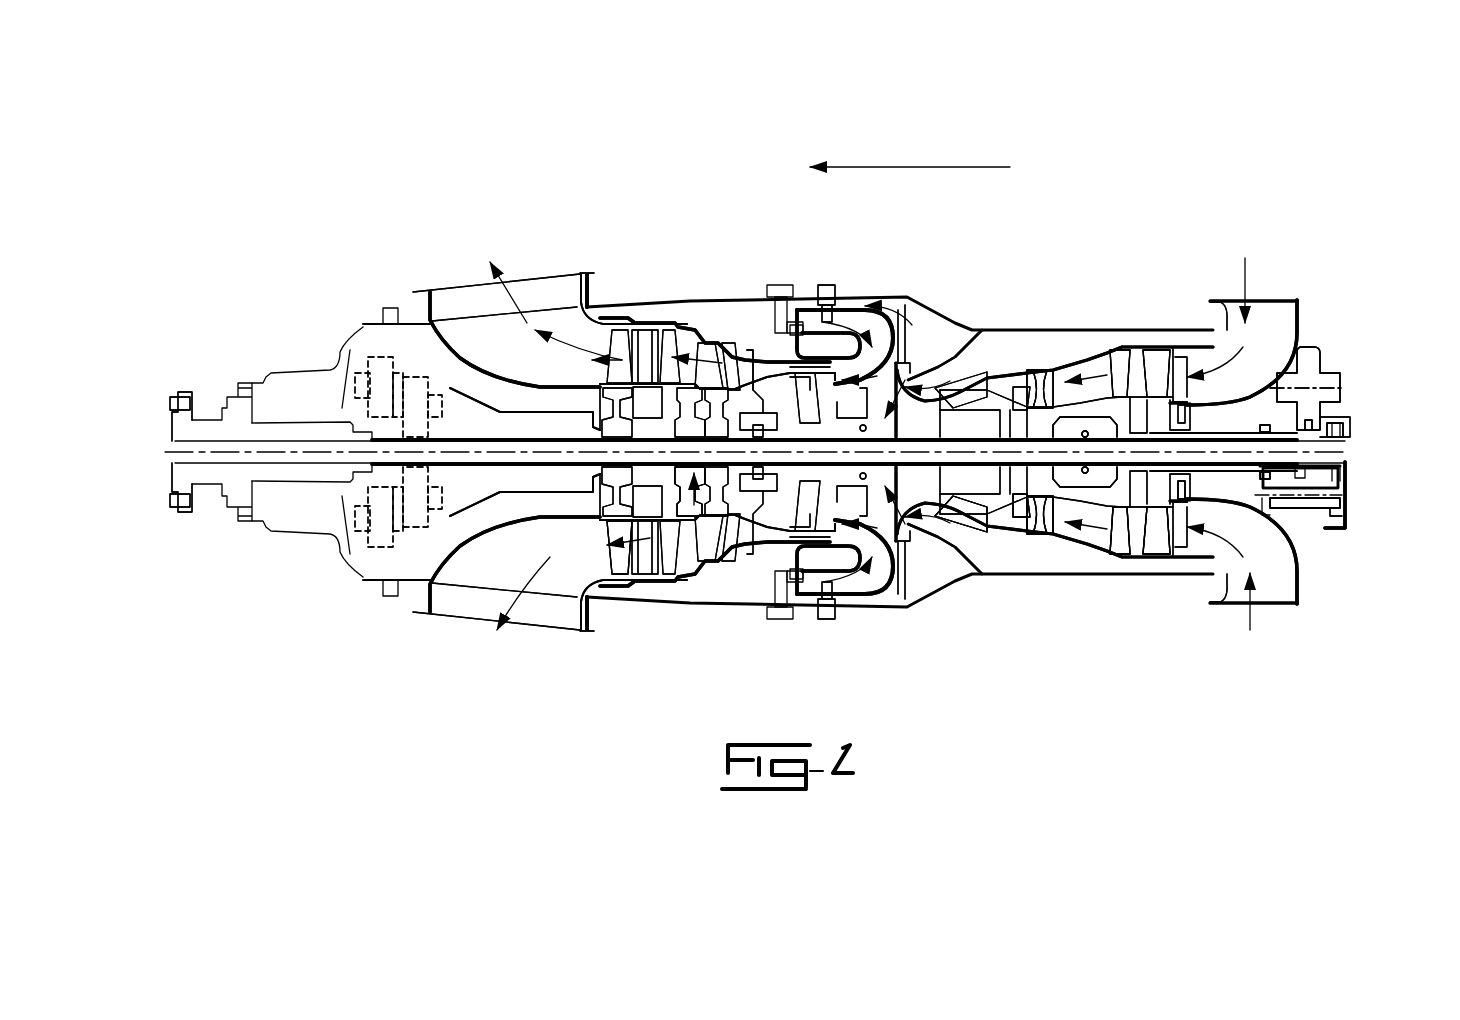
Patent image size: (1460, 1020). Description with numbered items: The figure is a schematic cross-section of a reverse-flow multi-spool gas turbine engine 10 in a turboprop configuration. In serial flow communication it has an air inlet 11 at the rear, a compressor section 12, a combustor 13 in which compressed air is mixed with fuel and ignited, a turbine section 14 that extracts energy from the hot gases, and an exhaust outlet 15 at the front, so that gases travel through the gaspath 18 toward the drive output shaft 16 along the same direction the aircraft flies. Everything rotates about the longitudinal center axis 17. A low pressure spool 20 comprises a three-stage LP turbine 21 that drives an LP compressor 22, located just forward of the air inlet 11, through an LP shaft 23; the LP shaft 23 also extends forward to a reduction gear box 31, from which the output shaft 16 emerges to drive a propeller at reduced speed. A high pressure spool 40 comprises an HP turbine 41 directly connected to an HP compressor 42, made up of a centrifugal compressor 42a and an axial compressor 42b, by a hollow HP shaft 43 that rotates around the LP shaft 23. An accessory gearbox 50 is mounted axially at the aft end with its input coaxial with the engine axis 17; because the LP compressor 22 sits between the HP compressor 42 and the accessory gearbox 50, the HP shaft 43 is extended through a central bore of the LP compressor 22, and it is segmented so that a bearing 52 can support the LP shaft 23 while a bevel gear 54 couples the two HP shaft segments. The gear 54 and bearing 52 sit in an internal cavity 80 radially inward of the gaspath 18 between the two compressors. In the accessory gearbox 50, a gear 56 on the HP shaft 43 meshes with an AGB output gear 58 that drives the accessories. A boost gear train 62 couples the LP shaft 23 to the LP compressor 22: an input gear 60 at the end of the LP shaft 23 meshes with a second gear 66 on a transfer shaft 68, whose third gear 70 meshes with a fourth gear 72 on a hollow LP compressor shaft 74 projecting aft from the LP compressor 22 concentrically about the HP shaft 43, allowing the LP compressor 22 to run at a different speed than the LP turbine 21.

The gas turbine engine 10 is at (250, 180).
The air inlet 11 is at (1287, 287).
The compressor section 12 is at (1205, 285).
The combustor 13 is at (812, 290).
The turbine section 14 is at (803, 262).
The exhaust outlet 15 is at (447, 293).
The drive output shaft 16 is at (185, 392).
The longitudinal center axis 17 is at (170, 452).
The gaspath 18 is at (1118, 533).
The low pressure spool 20 is at (688, 545).
The LP turbine 21 is at (622, 495).
The LP compressor 22 is at (1150, 530).
The LP shaft 23 is at (430, 560).
The reduction gear box 31 is at (378, 345).
The high pressure spool 40 is at (908, 378).
The HP turbine 41 is at (823, 367).
The HP compressor 42 is at (1007, 387).
The centrifugal compressor 42a is at (927, 517).
The axial compressor 42b is at (1007, 520).
The HP shaft 43 is at (1040, 490).
The accessory gearbox 50 is at (1335, 347).
The bearing 52 is at (1110, 520).
The gear 54 is at (1103, 403).
The gear 56 is at (1310, 424).
The AGB output gear 58 is at (1333, 378).
The input gear 60 is at (1337, 432).
The boost gear train 62 is at (1323, 523).
The second gear 66 is at (1340, 482).
The transfer shaft 68 is at (1277, 523).
The third gear 70 is at (1247, 523).
The fourth gear 72 is at (1264, 423).
The LP compressor shaft 74 is at (1243, 560).
The internal cavity 80 is at (1047, 392).